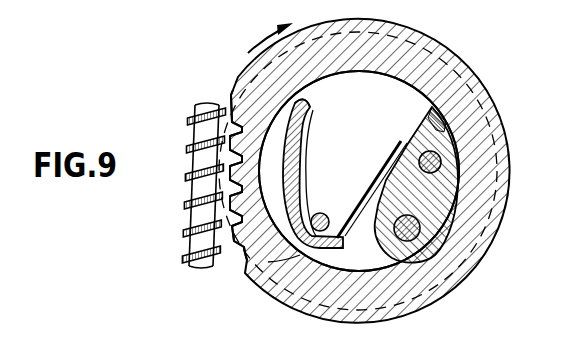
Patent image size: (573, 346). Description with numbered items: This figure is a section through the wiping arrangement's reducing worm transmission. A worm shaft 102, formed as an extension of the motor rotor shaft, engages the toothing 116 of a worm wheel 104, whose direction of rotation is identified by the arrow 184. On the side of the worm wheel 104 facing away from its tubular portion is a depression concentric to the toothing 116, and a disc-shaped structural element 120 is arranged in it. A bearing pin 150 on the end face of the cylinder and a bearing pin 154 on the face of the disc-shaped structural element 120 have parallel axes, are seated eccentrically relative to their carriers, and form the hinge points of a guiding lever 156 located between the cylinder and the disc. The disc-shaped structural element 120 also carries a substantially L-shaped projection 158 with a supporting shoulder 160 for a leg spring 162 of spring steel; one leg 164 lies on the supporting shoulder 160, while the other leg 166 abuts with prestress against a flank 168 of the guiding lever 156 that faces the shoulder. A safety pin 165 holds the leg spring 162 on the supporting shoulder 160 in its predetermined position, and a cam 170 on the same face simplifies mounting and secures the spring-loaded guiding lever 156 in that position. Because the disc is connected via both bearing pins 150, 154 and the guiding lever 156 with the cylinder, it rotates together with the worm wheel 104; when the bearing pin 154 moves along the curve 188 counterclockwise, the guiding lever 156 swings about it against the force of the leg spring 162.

The worm shaft 102 is at (187, 219).
The worm wheel 104 is at (470, 233).
The toothing 116 is at (232, 100).
The disc-shaped structural element 120 is at (442, 50).
The bearing pin 150 is at (432, 158).
The bearing pin 154 is at (420, 258).
The guiding lever 156 is at (435, 202).
The L-shaped projection 158 is at (246, 262).
The supporting shoulder 160 is at (303, 146).
The leg spring 162 is at (306, 171).
The leg 164 is at (309, 113).
The safety pin 165 is at (268, 262).
The leg 166 is at (357, 209).
The flank 168 is at (428, 122).
The cam 170 is at (480, 97).
The arrow 184 is at (258, 44).
The curve 188 is at (398, 148).